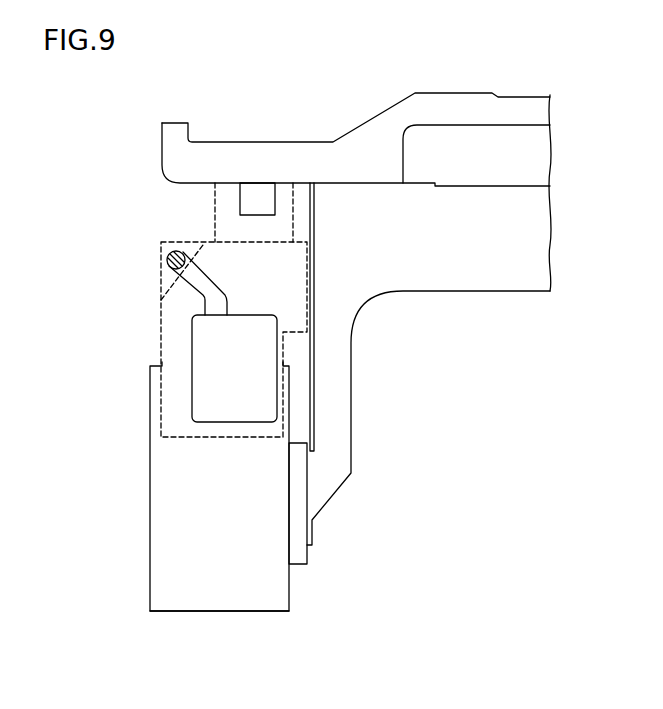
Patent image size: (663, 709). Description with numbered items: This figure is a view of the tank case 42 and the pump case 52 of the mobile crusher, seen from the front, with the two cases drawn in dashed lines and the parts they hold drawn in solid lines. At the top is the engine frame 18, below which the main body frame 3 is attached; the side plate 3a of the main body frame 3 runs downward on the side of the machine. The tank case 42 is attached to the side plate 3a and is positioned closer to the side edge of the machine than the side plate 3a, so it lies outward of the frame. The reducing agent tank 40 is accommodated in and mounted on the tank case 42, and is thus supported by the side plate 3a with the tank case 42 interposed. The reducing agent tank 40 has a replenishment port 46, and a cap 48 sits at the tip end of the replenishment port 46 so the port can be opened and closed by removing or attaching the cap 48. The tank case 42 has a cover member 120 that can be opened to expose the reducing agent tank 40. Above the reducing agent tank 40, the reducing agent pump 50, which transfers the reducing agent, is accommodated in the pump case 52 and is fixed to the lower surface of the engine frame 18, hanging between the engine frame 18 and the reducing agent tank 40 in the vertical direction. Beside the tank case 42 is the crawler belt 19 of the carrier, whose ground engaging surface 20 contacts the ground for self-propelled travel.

The engine frame 18 is at (432, 112).
The main body frame 3 is at (533, 245).
The side plate 3a is at (315, 360).
The reducing agent pump 50 is at (253, 200).
The pump case 52 is at (212, 231).
The tank case 42 is at (161, 343).
The reducing agent tank 40 is at (225, 386).
The replenishment port 46 is at (200, 283).
The cap 48 is at (166, 253).
The cover member 120 is at (162, 282).
The crawler belt 19 is at (187, 529).
The ground engaging surface 20 is at (217, 611).